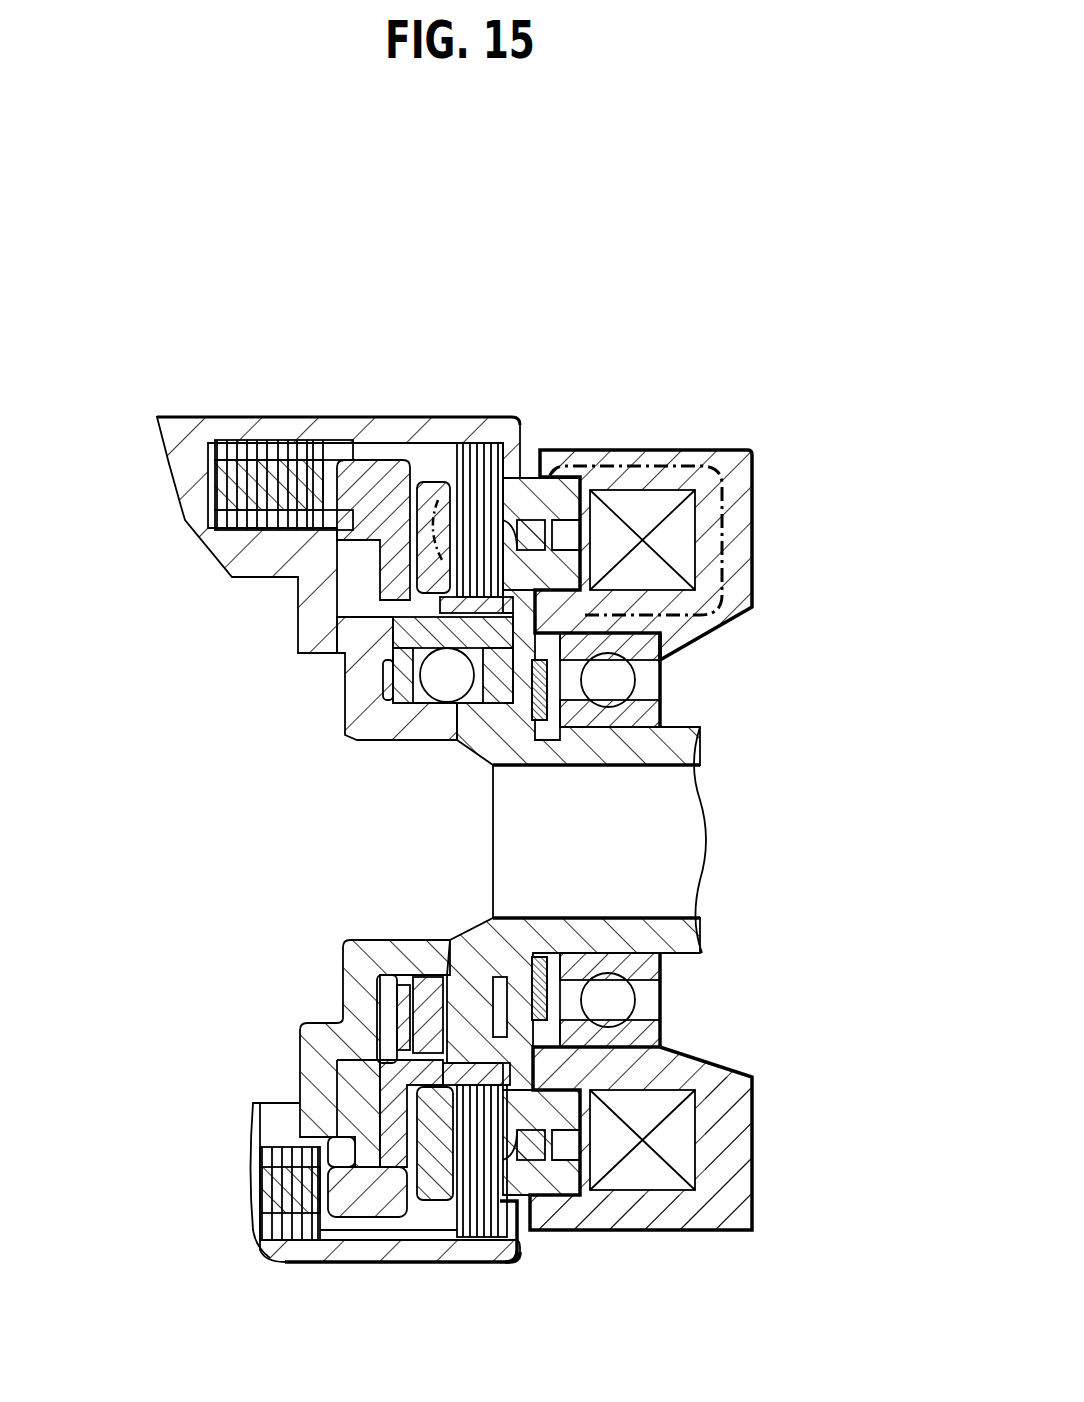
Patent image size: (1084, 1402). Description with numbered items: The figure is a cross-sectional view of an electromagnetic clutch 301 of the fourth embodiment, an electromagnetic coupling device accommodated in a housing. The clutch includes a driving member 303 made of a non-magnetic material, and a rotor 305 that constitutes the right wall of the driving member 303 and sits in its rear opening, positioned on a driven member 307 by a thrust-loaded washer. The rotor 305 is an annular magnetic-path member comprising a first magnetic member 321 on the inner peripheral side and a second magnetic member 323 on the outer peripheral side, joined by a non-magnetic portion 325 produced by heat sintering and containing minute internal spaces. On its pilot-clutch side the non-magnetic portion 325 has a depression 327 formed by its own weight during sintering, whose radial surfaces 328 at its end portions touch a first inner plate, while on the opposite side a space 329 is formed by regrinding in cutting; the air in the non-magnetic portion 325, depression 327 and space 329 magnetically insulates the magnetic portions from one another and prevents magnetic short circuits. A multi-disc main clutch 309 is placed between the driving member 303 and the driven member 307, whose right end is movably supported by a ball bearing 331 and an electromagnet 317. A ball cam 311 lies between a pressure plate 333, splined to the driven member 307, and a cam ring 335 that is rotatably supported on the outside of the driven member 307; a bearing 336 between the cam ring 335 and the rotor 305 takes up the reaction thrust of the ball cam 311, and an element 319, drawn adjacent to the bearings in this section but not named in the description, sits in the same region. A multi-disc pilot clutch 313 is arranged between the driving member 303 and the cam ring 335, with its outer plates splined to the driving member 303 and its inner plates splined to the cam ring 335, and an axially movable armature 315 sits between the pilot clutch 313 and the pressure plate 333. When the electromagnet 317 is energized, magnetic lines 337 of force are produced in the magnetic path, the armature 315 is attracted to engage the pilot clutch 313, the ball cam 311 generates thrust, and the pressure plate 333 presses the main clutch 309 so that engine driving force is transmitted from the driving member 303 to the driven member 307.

The electromagnetic clutch 301 is at (739, 228).
The driving member 303 is at (164, 402).
The rotor 305 is at (531, 462).
The driven member 307 is at (725, 742).
The multi-disc main clutch 309 is at (283, 380).
The ball cam 311 is at (423, 762).
The multi-disc pilot clutch 313 is at (488, 380).
The armature 315 is at (440, 480).
The electromagnet 317 is at (782, 452).
The spacer 319 is at (537, 712).
The first magnetic member 321 is at (557, 1113).
The second magnetic member 323 is at (607, 1231).
The non-magnetic portion 325 is at (553, 1200).
The depression 327 is at (519, 1258).
The radial surfaces 328 is at (483, 1187).
The space 329 is at (717, 1231).
The ball bearing 331 is at (620, 683).
The pressure plate 333 is at (410, 664).
The cam ring 335 is at (480, 676).
The bearing 336 is at (515, 960).
The magnetic lines of force 337 is at (725, 527).